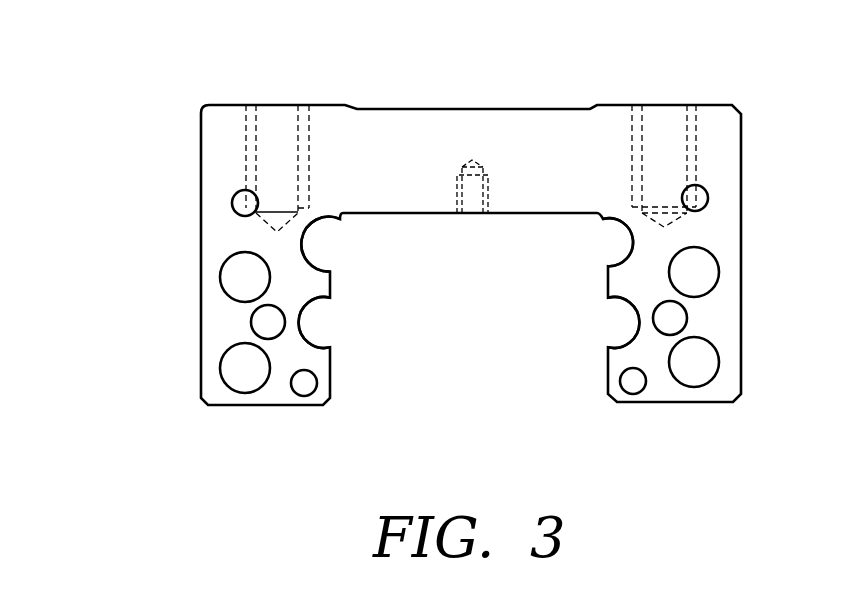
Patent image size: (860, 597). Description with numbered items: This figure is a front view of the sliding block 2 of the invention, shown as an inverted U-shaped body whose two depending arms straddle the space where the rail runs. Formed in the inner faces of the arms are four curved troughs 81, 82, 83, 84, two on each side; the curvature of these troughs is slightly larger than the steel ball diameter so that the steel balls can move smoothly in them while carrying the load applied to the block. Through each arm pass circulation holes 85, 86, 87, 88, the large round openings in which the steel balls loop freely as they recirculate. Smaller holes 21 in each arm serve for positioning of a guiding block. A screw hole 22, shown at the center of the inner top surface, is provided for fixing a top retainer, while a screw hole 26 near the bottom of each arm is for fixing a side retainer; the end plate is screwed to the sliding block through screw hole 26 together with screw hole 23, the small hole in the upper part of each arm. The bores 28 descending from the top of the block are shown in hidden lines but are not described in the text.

The sliding block 2 is at (500, 137).
The holes 21 is at (260, 323).
The screw hole 22 is at (473, 214).
The screw hole 23 is at (238, 192).
The screw hole 26 is at (300, 385).
The threaded bore 28 is at (275, 115).
The curved trough 81 is at (607, 225).
The curved trough 82 is at (315, 250).
The curved trough 83 is at (618, 305).
The curved trough 84 is at (313, 318).
The circulation hole 85 is at (715, 257).
The circulation hole 86 is at (223, 260).
The circulation hole 87 is at (718, 360).
The circulation hole 88 is at (223, 363).